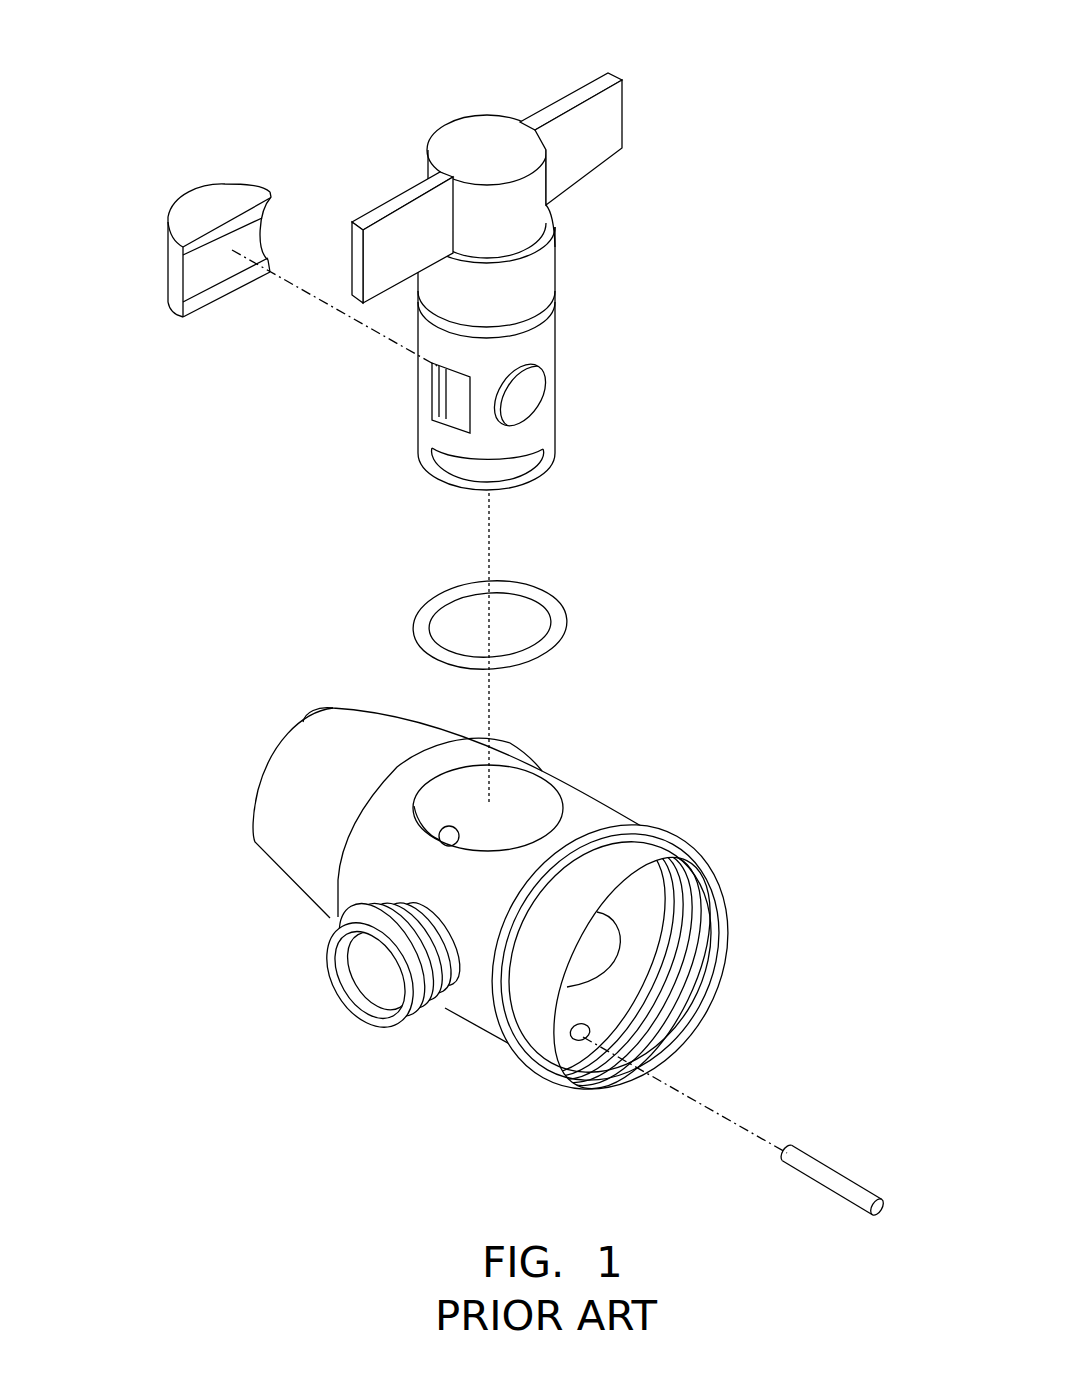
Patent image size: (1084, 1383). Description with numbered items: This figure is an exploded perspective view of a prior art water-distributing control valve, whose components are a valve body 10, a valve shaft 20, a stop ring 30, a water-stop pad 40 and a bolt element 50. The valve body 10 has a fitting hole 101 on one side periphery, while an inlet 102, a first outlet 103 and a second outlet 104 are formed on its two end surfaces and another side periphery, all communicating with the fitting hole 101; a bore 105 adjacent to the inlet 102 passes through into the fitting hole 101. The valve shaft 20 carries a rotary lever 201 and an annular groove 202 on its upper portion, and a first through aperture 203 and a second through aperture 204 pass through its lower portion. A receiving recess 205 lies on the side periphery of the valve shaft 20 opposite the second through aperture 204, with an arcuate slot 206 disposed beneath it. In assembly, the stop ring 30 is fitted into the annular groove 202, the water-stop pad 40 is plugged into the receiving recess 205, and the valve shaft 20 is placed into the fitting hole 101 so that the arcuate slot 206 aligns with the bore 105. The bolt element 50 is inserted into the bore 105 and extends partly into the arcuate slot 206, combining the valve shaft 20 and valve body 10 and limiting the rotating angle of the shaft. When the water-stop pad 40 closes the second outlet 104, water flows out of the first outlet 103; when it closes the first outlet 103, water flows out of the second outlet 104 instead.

The valve body 10 is at (495, 840).
The fitting hole 101 is at (530, 790).
The inlet 102 is at (593, 953).
The first outlet 103 is at (440, 830).
The second outlet 104 is at (386, 966).
The bore 105 is at (583, 1040).
The valve shaft 20 is at (480, 278).
The rotary lever 201 is at (568, 97).
The annular groove 202 is at (540, 320).
The first through aperture 203 is at (460, 403).
The second through aperture 204 is at (522, 397).
The receiving recess 205 is at (432, 385).
The arcuate slot 206 is at (460, 463).
The stop ring 30 is at (396, 601).
The water-stop pad 40 is at (168, 189).
The bolt element 50 is at (861, 1168).